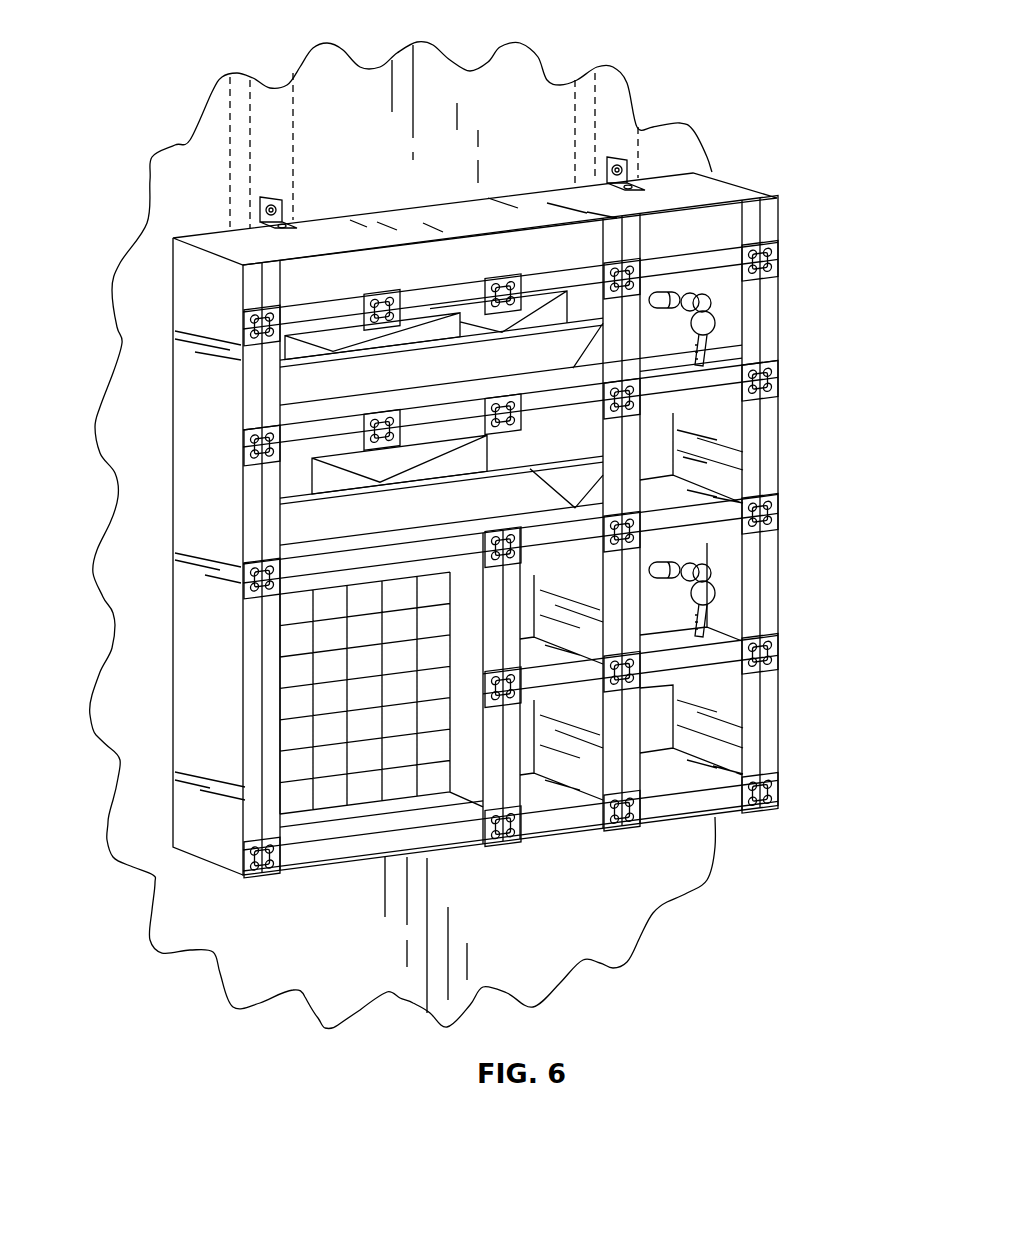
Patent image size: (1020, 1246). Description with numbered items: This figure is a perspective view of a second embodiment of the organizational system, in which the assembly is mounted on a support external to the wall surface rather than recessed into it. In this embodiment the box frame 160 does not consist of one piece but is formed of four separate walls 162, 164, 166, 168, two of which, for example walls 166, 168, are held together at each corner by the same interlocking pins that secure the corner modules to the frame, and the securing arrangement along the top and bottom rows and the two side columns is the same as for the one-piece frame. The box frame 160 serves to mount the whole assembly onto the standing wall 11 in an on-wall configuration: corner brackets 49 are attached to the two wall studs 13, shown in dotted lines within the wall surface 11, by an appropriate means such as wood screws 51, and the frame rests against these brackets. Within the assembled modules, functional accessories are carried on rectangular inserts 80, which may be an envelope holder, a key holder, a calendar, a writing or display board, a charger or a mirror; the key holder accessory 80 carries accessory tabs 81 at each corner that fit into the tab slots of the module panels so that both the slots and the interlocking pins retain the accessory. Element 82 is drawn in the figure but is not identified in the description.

The standing wall 11 is at (119, 548).
The wall studs 13 is at (277, 117).
The corner brackets 49 is at (290, 212).
The wood screws 51 is at (285, 210).
The insert 80 is at (712, 335).
The accessory tabs 81 is at (642, 343).
The key tag 82 is at (717, 598).
The box frame 160 is at (524, 566).
The wall 162 is at (510, 556).
The wall 164 is at (778, 310).
The wall 166 is at (511, 535).
The wall 168 is at (463, 217).